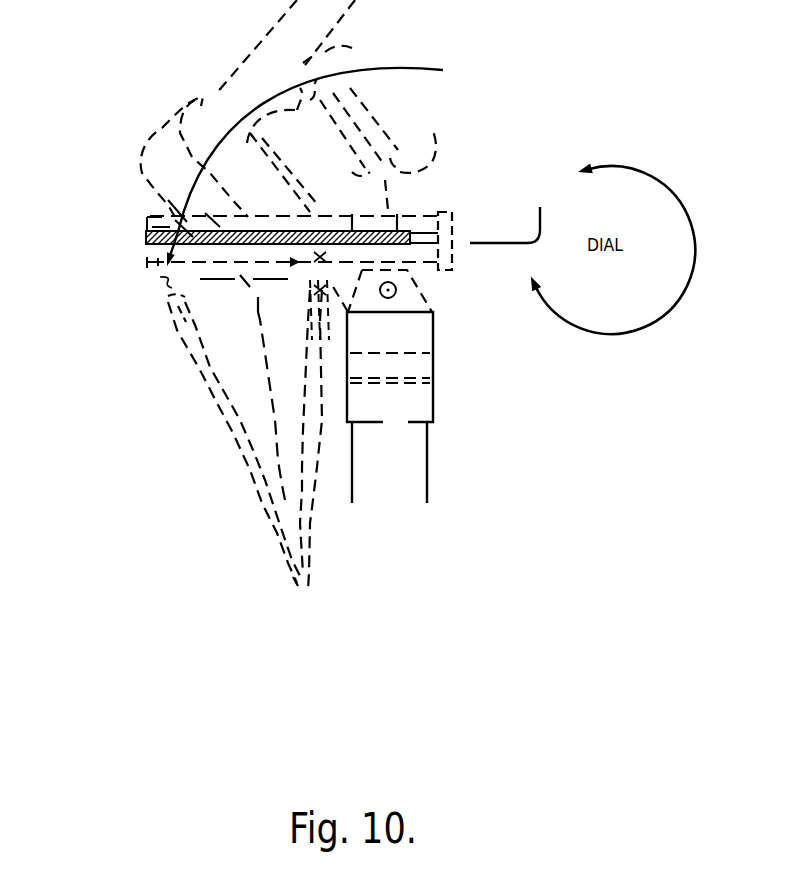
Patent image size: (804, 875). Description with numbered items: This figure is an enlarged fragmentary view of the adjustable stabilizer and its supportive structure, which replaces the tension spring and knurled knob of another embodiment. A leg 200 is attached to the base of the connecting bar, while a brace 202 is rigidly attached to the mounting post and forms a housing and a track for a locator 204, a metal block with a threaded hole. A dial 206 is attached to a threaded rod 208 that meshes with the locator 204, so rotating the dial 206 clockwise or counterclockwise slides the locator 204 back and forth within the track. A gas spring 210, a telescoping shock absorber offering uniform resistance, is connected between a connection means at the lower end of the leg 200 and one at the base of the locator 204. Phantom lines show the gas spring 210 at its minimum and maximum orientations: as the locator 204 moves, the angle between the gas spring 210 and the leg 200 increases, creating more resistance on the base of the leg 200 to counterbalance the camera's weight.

The leg 200 is at (290, 400).
The brace 202 is at (301, 283).
The locator 204 is at (147, 215).
The dial 206 is at (457, 217).
The threaded rod 208 is at (147, 243).
The gas spring 210 is at (205, 419).